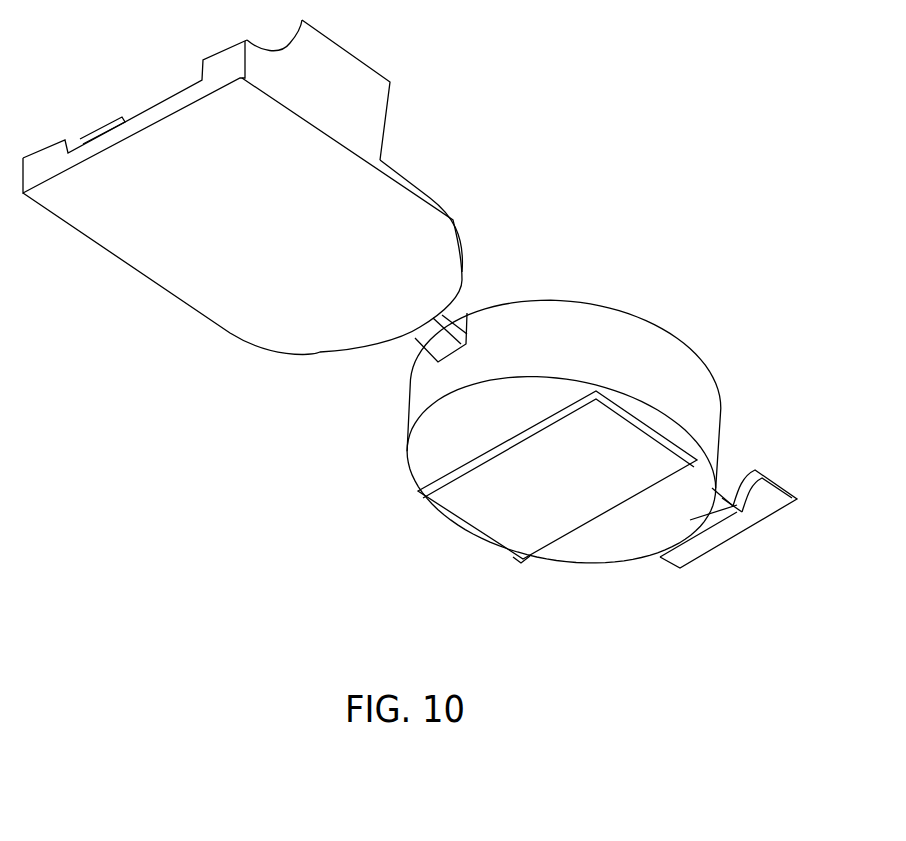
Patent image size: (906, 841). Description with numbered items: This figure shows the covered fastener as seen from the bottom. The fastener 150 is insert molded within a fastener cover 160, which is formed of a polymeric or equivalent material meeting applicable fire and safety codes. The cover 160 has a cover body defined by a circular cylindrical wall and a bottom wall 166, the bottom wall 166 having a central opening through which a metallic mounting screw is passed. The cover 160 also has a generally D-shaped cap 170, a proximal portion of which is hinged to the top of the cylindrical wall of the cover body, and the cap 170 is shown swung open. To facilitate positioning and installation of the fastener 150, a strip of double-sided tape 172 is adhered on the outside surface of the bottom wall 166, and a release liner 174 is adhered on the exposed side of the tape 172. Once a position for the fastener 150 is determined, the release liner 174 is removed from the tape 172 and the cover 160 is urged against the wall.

The fastener 150 is at (728, 548).
The fastener cover 160 is at (683, 336).
The bottom wall 166 is at (547, 396).
The cap 170 is at (263, 327).
The double-sided tape 172 is at (423, 338).
The release liner 174 is at (570, 490).